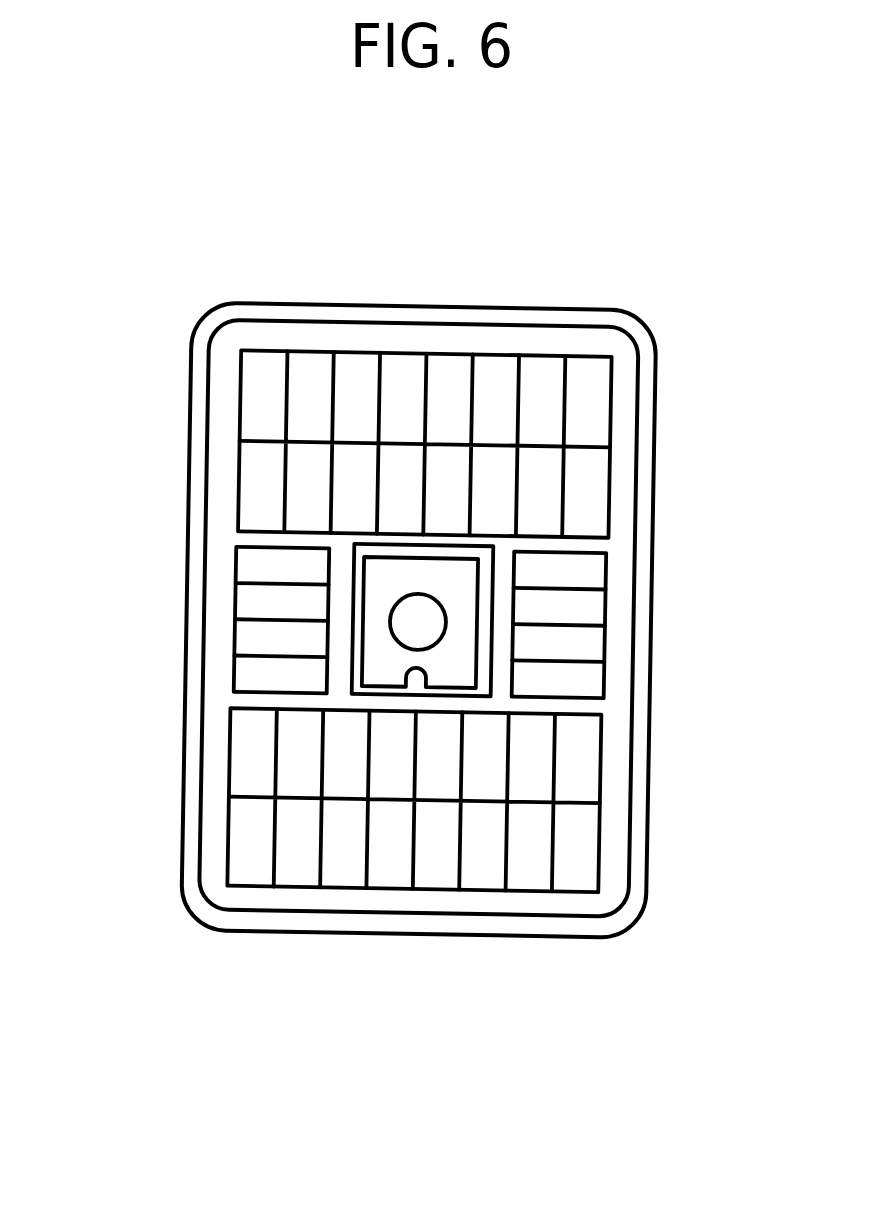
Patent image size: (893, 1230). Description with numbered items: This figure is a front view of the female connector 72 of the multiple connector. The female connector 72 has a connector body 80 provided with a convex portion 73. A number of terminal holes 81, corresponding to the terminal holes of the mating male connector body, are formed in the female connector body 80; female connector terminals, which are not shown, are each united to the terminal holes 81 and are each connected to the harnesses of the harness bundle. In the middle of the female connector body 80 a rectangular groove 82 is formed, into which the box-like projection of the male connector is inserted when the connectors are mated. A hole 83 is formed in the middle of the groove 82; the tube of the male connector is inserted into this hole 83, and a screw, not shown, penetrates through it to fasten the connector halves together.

The female connector 72 is at (458, 277).
The convex portion 73 is at (560, 313).
The connector body 80 is at (392, 303).
The terminal holes 81 is at (307, 352).
The rectangular groove 82 is at (353, 665).
The hole 83 is at (445, 633).